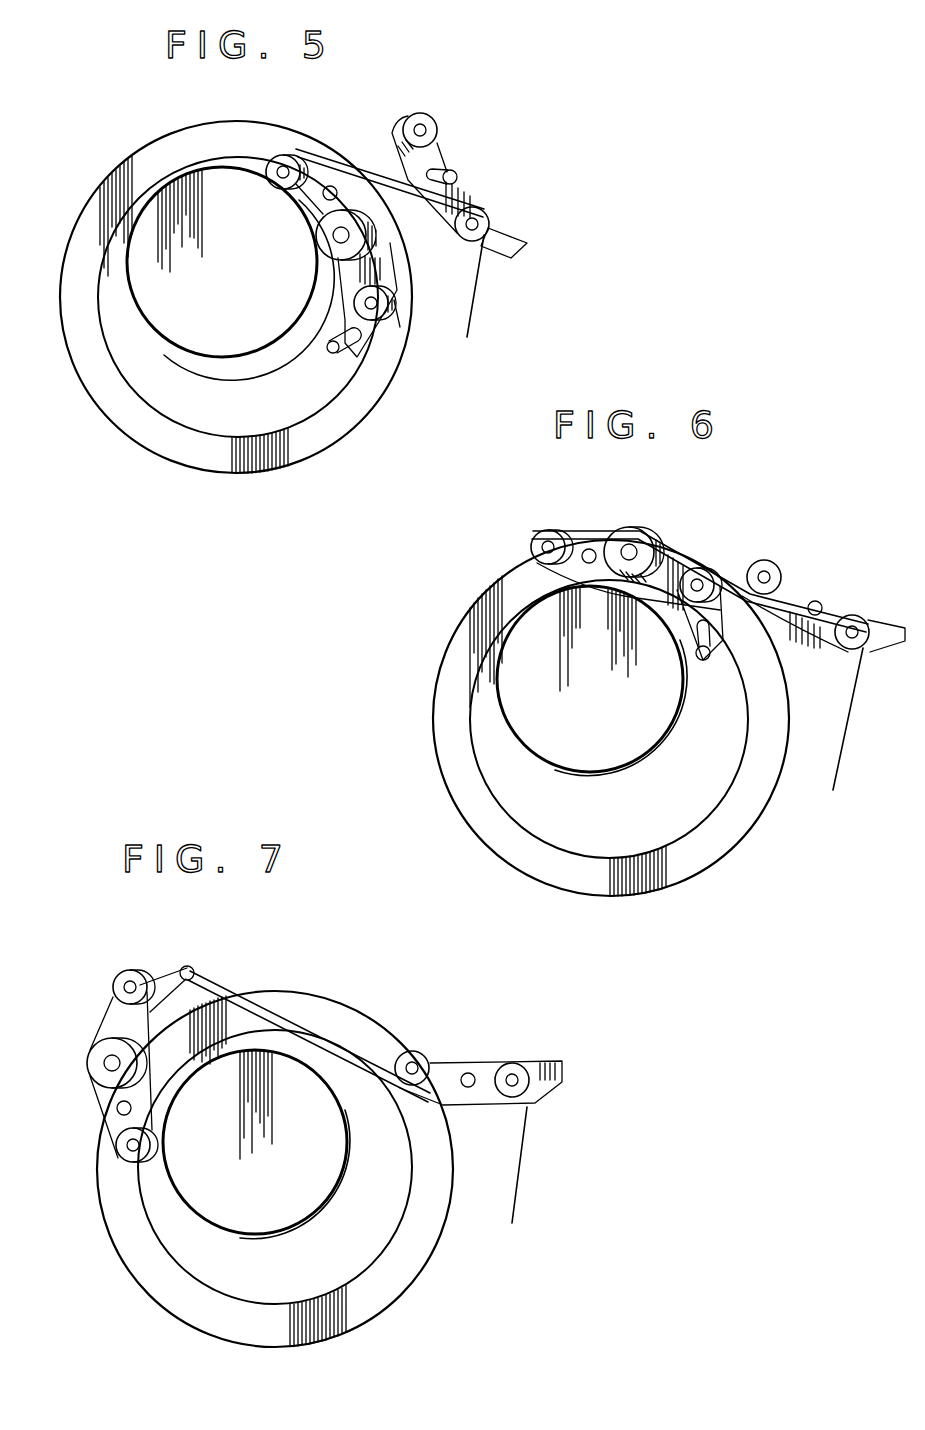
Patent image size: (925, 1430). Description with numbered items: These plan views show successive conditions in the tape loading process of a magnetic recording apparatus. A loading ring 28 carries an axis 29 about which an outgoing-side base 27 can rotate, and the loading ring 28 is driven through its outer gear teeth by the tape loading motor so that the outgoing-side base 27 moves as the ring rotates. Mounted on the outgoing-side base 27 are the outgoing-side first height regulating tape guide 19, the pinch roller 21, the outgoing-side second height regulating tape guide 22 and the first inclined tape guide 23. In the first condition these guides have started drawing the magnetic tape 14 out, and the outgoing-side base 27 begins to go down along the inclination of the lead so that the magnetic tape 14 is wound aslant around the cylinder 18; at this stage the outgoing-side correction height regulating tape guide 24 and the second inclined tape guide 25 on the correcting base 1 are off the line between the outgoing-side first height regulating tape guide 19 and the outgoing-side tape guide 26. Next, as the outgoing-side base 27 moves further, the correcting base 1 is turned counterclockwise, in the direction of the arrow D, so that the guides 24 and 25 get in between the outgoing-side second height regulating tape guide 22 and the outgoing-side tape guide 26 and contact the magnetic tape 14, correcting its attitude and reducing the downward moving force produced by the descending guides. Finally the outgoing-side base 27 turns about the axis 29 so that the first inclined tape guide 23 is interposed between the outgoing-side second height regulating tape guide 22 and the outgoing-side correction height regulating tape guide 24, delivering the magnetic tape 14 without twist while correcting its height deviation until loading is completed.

In FIG. 5, the correcting base 1 is at (478, 198).
In FIG. 6, the correcting base 1 is at (798, 590).
In FIG. 7, the correcting base 1 is at (500, 1125).
In FIG. 5, the magnetic tape 14 is at (325, 156).
In FIG. 6, the magnetic tape 14 is at (587, 530).
In FIG. 7, the magnetic tape 14 is at (320, 1035).
In FIG. 5, the cylinder 18 is at (192, 340).
In FIG. 6, the cylinder 18 is at (548, 762).
In FIG. 7, the cylinder 18 is at (220, 1190).
In FIG. 5, the outgoing-side first height regulating tape guide 19 is at (283, 158).
In FIG. 6, the outgoing-side first height regulating tape guide 19 is at (552, 547).
In FIG. 7, the outgoing-side first height regulating tape guide 19 is at (122, 1160).
In FIG. 5, the pinch roller 21 is at (320, 240).
In FIG. 6, the pinch roller 21 is at (634, 552).
In FIG. 7, the pinch roller 21 is at (90, 1063).
In FIG. 5, the outgoing-side second height regulating tape guide 22 is at (400, 327).
In FIG. 6, the outgoing-side second height regulating tape guide 22 is at (700, 568).
In FIG. 7, the outgoing-side second height regulating tape guide 22 is at (125, 970).
In FIG. 5, the first inclined tape guide 23 is at (330, 353).
In FIG. 6, the first inclined tape guide 23 is at (705, 665).
In FIG. 7, the first inclined tape guide 23 is at (192, 966).
In FIG. 5, the outgoing-side correction height regulating tape guide 24 is at (418, 113).
In FIG. 6, the outgoing-side correction height regulating tape guide 24 is at (760, 560).
In FIG. 7, the outgoing-side correction height regulating tape guide 24 is at (405, 1053).
In FIG. 5, the second inclined tape guide 25 is at (452, 172).
In FIG. 6, the second inclined tape guide 25 is at (822, 604).
In FIG. 7, the second inclined tape guide 25 is at (468, 1072).
In FIG. 5, the outgoing-side tape guide 26 is at (490, 228).
In FIG. 6, the outgoing-side tape guide 26 is at (840, 650).
In FIG. 7, the outgoing-side tape guide 26 is at (516, 1063).
In FIG. 5, the outgoing-side base 27 is at (355, 302).
In FIG. 6, the outgoing-side base 27 is at (660, 620).
In FIG. 7, the outgoing-side base 27 is at (100, 1020).
In FIG. 5, the loading ring 28 is at (182, 458).
In FIG. 6, the loading ring 28 is at (705, 846).
In FIG. 7, the loading ring 28 is at (275, 1169).
In FIG. 5, the axis 29 is at (322, 196).
In FIG. 6, the axis 29 is at (590, 565).
In FIG. 7, the axis 29 is at (115, 1112).
In FIG. 6, the arrow D is at (790, 548).